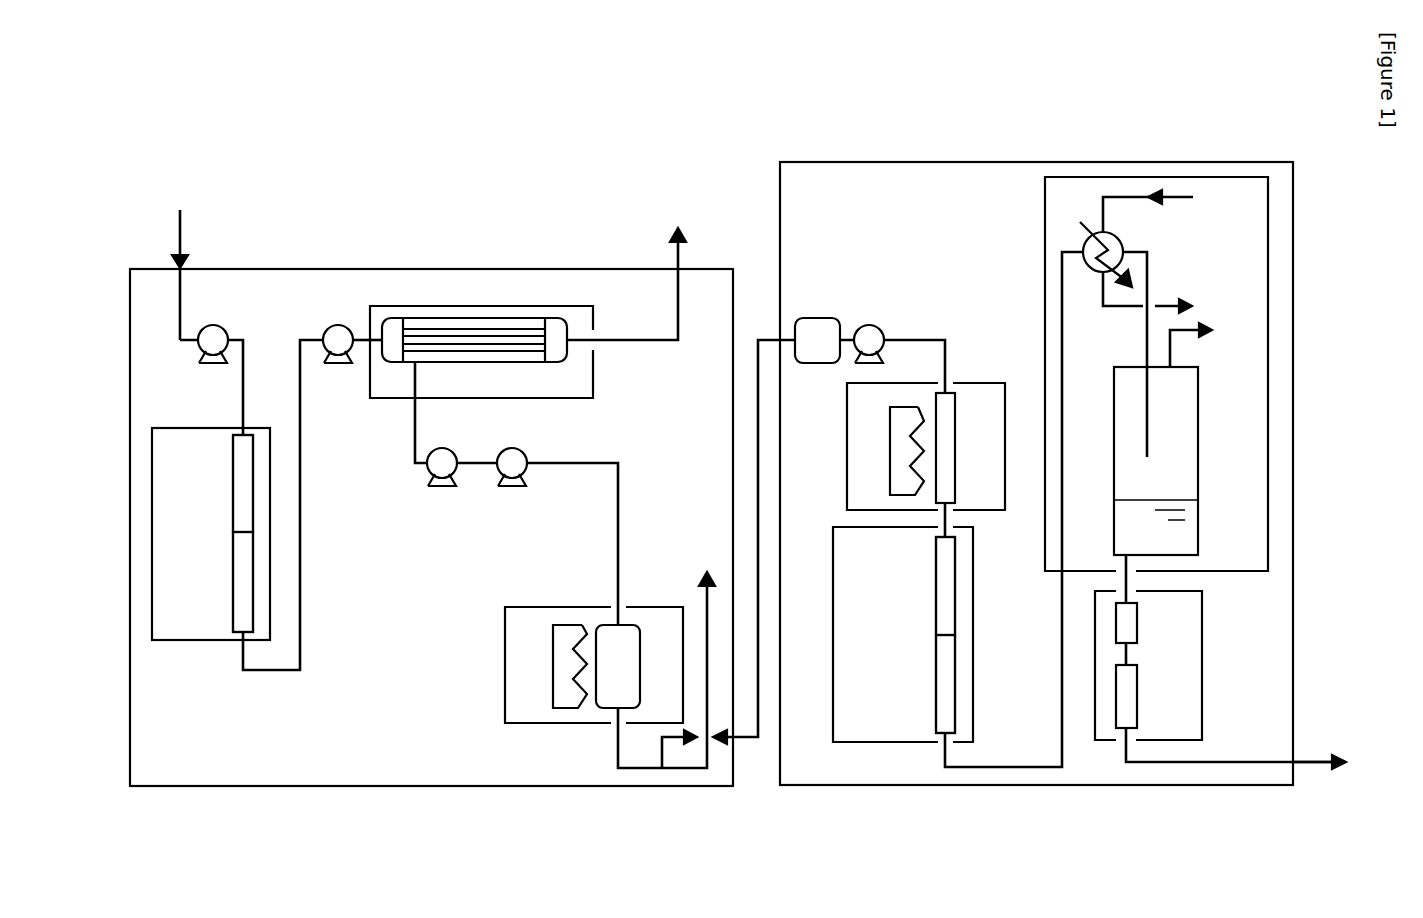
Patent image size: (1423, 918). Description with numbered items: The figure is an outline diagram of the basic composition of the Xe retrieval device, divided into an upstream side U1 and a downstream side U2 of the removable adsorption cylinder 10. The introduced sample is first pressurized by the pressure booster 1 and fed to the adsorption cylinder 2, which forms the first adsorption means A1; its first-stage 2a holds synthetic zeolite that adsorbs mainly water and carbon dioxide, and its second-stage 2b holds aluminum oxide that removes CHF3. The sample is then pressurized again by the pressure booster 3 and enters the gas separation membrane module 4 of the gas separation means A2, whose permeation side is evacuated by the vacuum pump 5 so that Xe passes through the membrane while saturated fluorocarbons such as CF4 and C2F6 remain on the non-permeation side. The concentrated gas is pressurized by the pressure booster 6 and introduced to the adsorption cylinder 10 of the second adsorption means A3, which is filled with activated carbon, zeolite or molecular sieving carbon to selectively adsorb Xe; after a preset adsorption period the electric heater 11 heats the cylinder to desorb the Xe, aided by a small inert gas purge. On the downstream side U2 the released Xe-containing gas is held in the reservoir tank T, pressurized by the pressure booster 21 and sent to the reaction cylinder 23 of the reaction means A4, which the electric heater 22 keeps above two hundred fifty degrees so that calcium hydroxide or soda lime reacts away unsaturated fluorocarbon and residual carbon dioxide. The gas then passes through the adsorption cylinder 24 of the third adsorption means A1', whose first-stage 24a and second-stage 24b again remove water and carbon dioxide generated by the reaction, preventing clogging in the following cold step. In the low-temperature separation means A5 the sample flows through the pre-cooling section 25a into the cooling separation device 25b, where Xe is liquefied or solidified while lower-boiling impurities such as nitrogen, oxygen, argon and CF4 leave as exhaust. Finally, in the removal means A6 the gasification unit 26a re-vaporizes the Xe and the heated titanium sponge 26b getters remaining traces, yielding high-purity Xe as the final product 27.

The pressure booster 1 is at (213, 361).
The adsorption cylinder 2 is at (200, 488).
The first-stage 2a is at (226, 483).
The second-stage 2b is at (226, 582).
The pressure booster 3 is at (338, 361).
The gas separation membrane module 4 is at (474, 357).
The vacuum pump 5 is at (442, 483).
The pressure booster 6 is at (512, 483).
The adsorption cylinder 10 is at (633, 666).
The electric heater 11 is at (552, 666).
The pressure booster 21 is at (869, 328).
The electric heater 22 is at (890, 451).
The reaction cylinder 23 is at (963, 448).
The adsorption cylinder 24 is at (892, 598).
The first-stage 24a is at (923, 586).
The second-stage 24b is at (923, 684).
The pre-cooling section 25a is at (1125, 252).
The cooling separation device 25b is at (1182, 461).
The gasification unit 26a is at (1148, 623).
The titanium sponge 26b is at (1148, 696).
The final product 27 is at (1318, 743).
The reservoir tank T is at (817, 328).
The upstream side U1 is at (431, 512).
The downstream side U2 is at (1017, 473).
The first adsorption means A1 is at (211, 519).
The gas separation means A2 is at (481, 338).
The second adsorption means A3 is at (594, 651).
The reaction means A4 is at (926, 434).
The third adsorption means A1' is at (925, 634).
The low-temperature separation means A5 is at (1138, 374).
The removal means A6 is at (1165, 665).